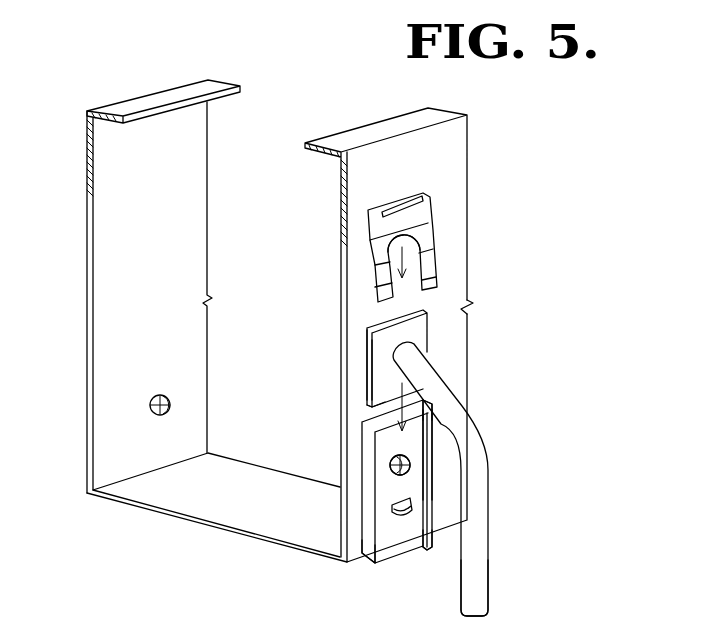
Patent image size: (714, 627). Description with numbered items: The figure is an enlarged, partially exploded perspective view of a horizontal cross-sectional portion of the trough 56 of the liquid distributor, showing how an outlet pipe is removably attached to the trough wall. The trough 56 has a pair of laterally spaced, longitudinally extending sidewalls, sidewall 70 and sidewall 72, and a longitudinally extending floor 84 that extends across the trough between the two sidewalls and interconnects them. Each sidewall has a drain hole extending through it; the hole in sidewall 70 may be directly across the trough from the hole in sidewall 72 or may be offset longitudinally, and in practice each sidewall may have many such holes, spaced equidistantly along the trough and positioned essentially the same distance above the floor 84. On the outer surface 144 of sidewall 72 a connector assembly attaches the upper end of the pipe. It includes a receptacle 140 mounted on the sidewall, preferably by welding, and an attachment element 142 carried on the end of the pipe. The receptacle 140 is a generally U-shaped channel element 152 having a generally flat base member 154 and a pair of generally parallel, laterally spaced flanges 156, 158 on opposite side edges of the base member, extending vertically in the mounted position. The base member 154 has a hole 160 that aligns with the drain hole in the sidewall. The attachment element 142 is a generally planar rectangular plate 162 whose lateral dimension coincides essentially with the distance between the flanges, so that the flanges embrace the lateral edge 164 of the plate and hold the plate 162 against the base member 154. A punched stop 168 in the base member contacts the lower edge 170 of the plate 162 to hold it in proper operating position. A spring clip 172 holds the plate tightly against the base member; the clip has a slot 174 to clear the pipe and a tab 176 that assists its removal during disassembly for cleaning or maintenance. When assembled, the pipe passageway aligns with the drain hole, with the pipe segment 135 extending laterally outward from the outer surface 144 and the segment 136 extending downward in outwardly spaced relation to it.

The trough 56 is at (99, 232).
The sidewall 70 is at (102, 324).
The sidewall 72 is at (462, 224).
The floor 84 is at (178, 502).
The segment 135 is at (436, 377).
The segment 136 is at (479, 587).
The receptacle 140 is at (400, 545).
The attachment element 142 is at (424, 331).
The outer surface 144 is at (460, 293).
The U-shaped channel element 152 is at (418, 498).
The base member 154 is at (412, 537).
The flange 156 is at (366, 552).
The flange 158 is at (431, 433).
The hole 160 is at (394, 465).
The plate 162 is at (377, 389).
The lateral edge 164 is at (367, 350).
The punched stop 168 is at (392, 500).
The lower edge 170 is at (367, 406).
The spring clip 172 is at (428, 232).
The slot 174 is at (415, 265).
The tab 176 is at (391, 208).